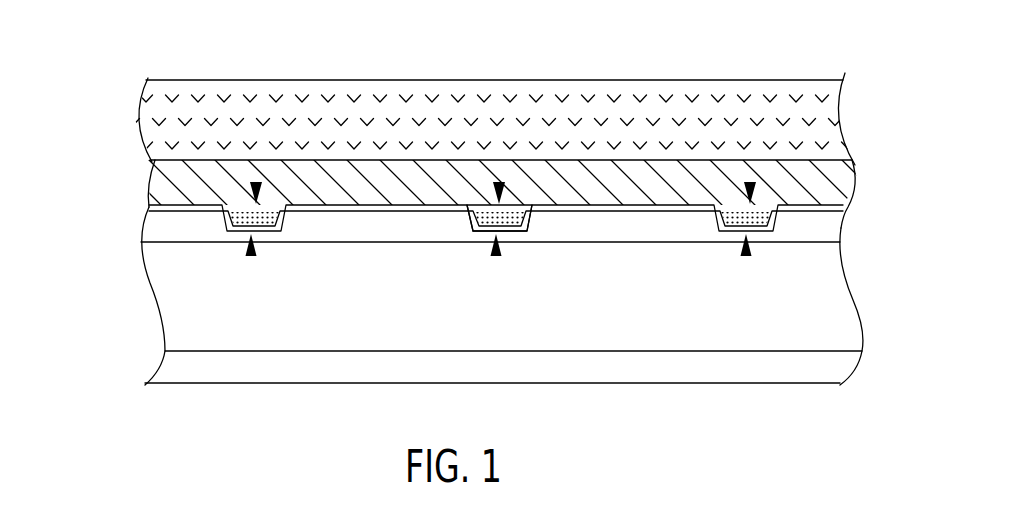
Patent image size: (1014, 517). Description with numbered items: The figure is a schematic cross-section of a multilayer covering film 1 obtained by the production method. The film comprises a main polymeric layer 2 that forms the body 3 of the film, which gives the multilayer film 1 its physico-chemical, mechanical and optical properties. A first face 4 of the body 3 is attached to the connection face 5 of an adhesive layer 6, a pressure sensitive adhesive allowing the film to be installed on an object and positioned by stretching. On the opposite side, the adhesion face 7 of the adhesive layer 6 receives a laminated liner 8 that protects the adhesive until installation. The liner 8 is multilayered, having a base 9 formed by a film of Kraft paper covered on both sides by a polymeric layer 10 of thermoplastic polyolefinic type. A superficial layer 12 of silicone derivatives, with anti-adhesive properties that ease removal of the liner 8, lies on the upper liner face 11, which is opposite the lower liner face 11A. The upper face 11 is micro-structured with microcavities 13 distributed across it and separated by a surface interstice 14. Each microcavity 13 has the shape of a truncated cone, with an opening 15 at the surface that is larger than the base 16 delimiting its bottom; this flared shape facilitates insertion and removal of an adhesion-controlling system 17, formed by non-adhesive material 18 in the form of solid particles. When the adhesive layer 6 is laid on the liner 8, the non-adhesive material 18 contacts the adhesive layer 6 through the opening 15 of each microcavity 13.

The multilayer covering film 1 is at (105, 65).
The main polymeric layer 2 is at (467, 125).
The body 3 is at (802, 105).
The first face 4 is at (207, 160).
The connection face 5 is at (828, 160).
The adhesive layer 6 is at (817, 187).
The adhesion face 7 is at (837, 206).
The liner 8 is at (450, 299).
The base 9 is at (182, 304).
The polymeric layer 10 is at (170, 228).
The upper liner face 11 is at (390, 205).
The lower liner face 11A is at (325, 383).
The superficial layer 12 is at (331, 205).
The microcavities 13 is at (256, 184).
The surface interstice 14 is at (630, 205).
The opening 15 is at (499, 184).
The base 16 is at (513, 232).
The adhesion-controlling system 17 is at (251, 254).
The non-adhesive material 18 is at (732, 205).